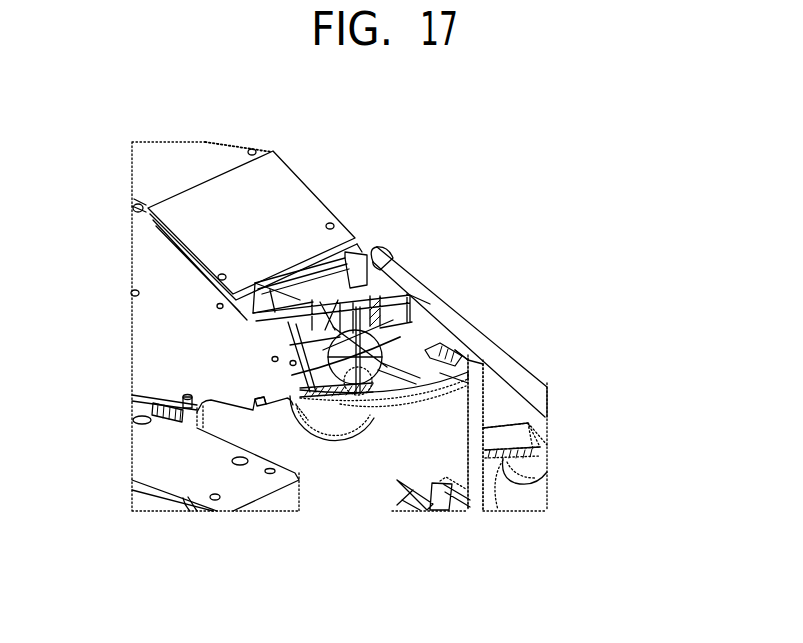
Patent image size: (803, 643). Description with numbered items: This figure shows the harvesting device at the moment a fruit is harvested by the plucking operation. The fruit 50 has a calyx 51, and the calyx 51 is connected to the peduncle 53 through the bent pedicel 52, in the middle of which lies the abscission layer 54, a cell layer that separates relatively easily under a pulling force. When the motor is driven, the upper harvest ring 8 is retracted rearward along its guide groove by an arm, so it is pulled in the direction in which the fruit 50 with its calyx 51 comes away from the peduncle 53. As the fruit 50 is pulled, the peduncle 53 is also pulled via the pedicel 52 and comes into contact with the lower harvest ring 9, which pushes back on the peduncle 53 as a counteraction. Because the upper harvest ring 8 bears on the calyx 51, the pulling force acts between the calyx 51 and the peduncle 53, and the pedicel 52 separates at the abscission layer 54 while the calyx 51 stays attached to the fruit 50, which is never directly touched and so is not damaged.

The upper harvest ring 8 is at (398, 336).
The calyx 51 is at (389, 362).
The abscission layer 54 is at (438, 348).
The pedicel 52 is at (458, 356).
The lower harvest ring 9 is at (446, 385).
The peduncle 53 is at (473, 482).
The fruit 50 is at (336, 407).